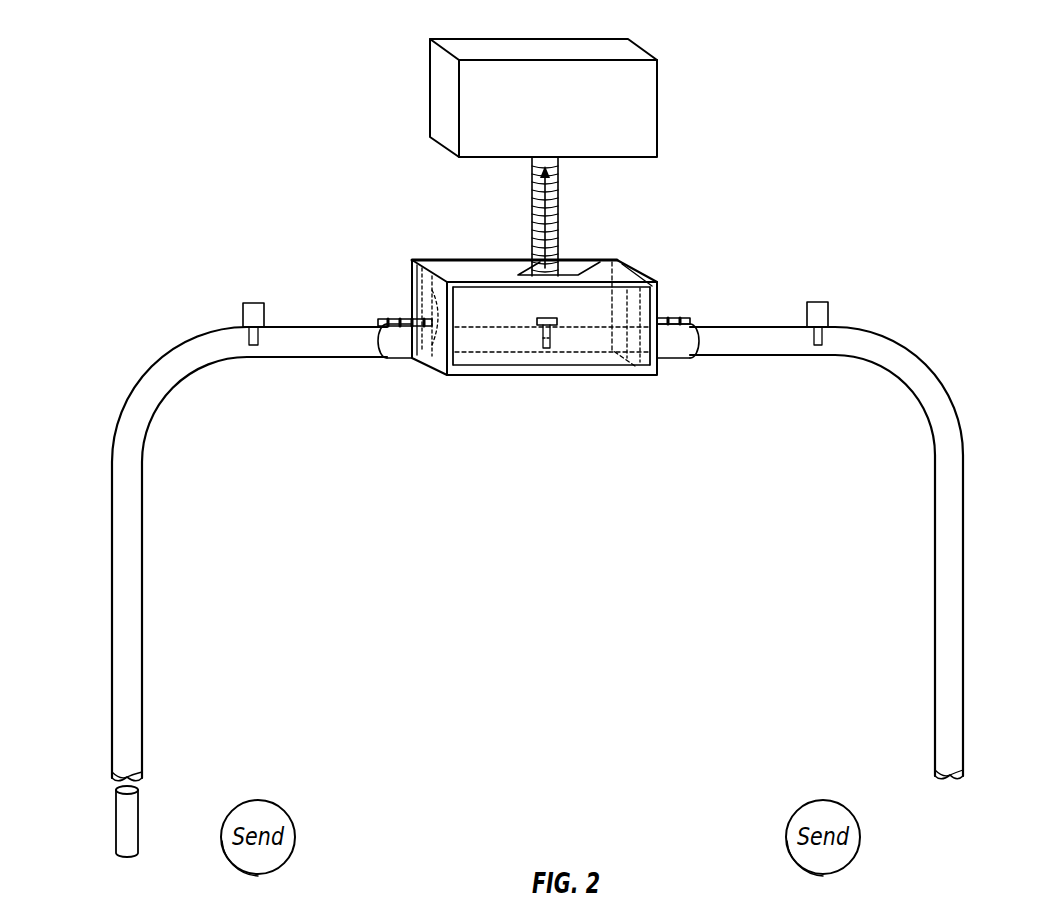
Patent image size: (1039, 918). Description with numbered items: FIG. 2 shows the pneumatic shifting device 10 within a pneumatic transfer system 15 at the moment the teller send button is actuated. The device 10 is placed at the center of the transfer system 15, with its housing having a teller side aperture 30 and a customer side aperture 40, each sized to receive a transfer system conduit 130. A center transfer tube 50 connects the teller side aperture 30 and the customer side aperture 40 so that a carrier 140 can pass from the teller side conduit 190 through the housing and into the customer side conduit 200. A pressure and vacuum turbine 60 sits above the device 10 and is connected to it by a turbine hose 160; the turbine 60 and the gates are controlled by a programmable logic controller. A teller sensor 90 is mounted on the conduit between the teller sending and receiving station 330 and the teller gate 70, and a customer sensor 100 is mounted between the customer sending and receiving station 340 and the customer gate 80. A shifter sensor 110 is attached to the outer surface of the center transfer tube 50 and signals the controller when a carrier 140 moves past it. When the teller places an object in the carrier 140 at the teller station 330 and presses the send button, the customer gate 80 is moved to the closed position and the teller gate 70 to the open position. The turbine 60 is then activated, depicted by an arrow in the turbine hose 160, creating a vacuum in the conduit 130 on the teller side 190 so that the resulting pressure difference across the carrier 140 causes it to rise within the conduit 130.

The pneumatic shifting device 10 is at (675, 226).
The pneumatic transfer system 15 is at (222, 150).
The teller side aperture 30 is at (425, 352).
The customer side aperture 40 is at (642, 300).
The center transfer tube 50 is at (497, 343).
The pressure and vacuum turbine 60 is at (645, 88).
The teller gate 70 is at (430, 292).
The customer gate 80 is at (637, 355).
The teller sensor 90 is at (250, 312).
The customer sensor 100 is at (818, 312).
The shifter sensor 110 is at (538, 316).
The pneumatic transfer system conduit 130 is at (152, 380).
The carrier 140 is at (118, 822).
The turbine hose 160 is at (531, 212).
The teller side conduit 190 is at (115, 578).
The customer side conduit 200 is at (960, 577).
The teller sending and receiving station 330 is at (122, 775).
The customer sending and receiving station 340 is at (952, 778).